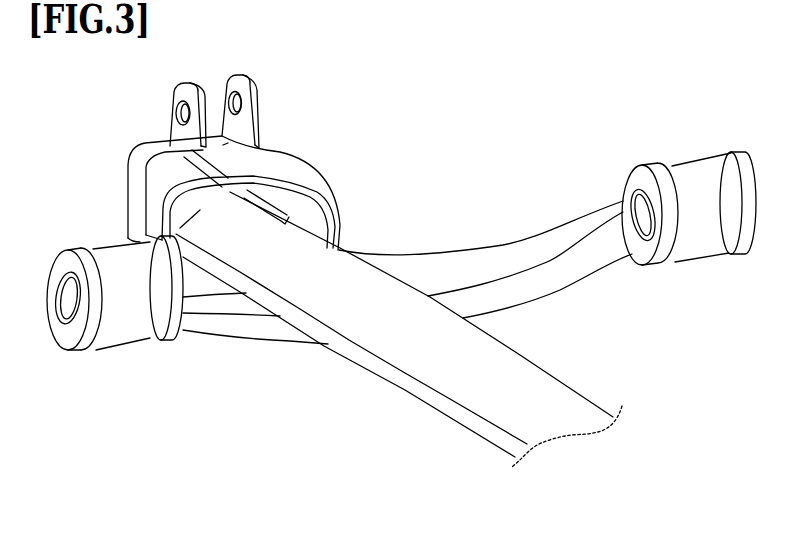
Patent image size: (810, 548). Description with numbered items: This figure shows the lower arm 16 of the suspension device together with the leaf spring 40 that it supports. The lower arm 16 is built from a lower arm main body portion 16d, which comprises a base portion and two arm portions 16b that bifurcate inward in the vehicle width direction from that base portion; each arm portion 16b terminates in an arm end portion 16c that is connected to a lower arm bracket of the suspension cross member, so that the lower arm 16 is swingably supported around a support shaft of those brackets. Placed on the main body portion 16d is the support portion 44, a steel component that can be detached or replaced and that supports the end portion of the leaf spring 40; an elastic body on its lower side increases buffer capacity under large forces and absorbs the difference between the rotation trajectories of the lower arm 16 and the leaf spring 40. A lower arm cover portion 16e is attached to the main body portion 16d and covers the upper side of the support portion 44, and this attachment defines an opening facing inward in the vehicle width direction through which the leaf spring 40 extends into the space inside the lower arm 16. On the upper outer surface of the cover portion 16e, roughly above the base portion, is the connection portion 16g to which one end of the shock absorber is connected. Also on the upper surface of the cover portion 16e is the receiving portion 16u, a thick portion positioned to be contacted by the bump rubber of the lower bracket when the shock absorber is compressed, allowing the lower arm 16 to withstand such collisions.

The lower arm 16 is at (420, 190).
The arm portions 16b is at (503, 244).
The arm end portion 16c is at (117, 335).
The lower arm main body portion 16d is at (577, 294).
The lower arm cover portion 16e is at (162, 195).
The connection portion 16g is at (256, 120).
The receiving portion 16u is at (262, 150).
The leaf spring 40 is at (543, 395).
The support portion 44 is at (278, 203).